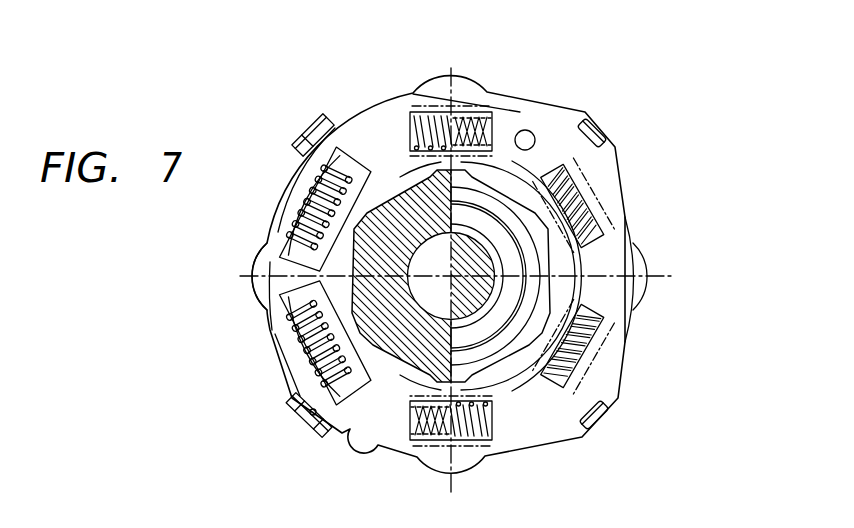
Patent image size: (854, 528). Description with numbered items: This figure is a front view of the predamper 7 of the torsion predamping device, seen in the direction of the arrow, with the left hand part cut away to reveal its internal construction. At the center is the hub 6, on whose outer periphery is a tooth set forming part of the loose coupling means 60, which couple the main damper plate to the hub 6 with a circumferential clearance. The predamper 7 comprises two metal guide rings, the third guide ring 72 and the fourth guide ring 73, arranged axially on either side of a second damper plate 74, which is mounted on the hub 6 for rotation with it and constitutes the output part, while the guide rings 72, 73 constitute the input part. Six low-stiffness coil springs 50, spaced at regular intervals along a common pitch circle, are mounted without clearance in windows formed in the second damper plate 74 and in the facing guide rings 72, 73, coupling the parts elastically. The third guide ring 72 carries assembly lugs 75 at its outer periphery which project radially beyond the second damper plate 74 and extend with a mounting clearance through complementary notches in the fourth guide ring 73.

The predamper 7 is at (380, 98).
The hub 6 is at (416, 366).
The second resilient members 50 is at (477, 126).
The loose coupling means 60 is at (538, 212).
The third guide ring 72 is at (298, 390).
The fourth guide ring 73 is at (543, 423).
The second damper plate 74 is at (282, 298).
The assembly lugs 75 is at (288, 402).